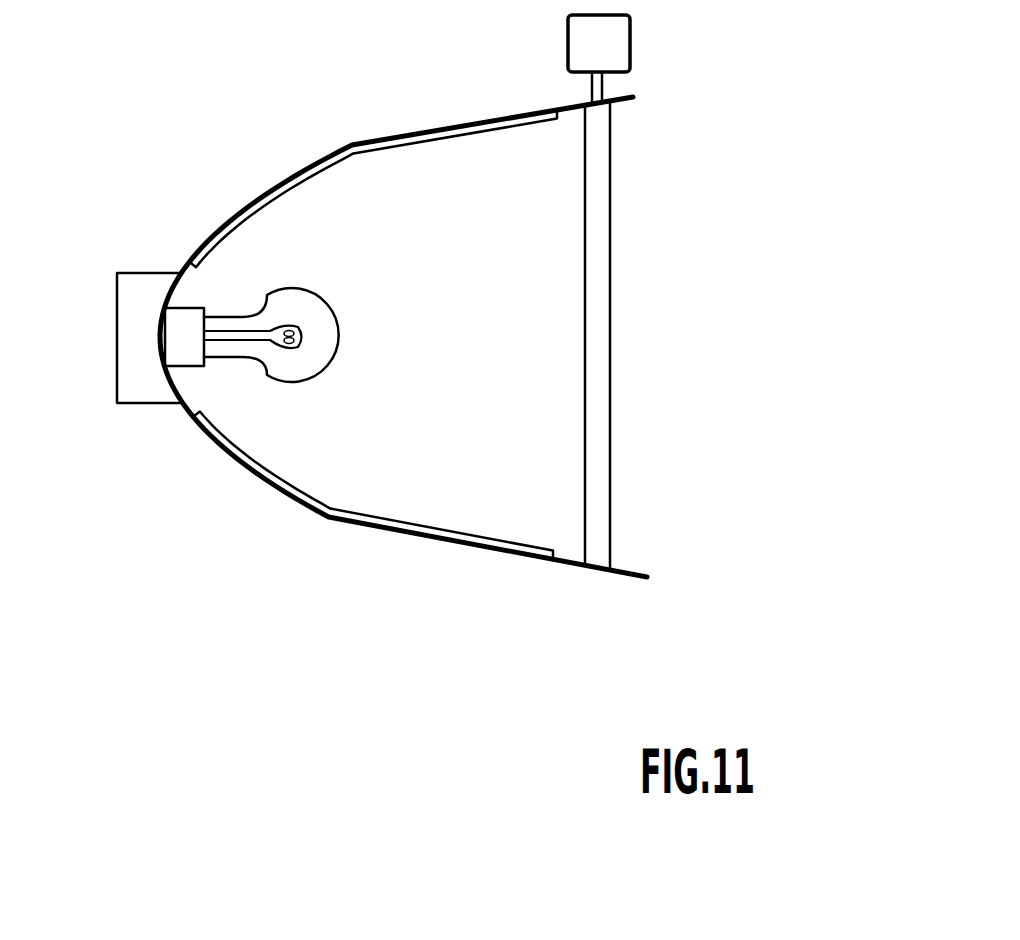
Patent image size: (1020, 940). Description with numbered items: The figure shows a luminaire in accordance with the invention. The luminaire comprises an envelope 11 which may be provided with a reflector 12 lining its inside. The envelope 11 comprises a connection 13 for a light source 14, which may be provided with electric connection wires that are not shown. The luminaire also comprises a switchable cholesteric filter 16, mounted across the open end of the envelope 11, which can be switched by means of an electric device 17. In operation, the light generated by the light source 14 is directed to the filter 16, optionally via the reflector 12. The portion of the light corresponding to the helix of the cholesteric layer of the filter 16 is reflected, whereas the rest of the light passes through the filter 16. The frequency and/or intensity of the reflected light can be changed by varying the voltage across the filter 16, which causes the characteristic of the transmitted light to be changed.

The envelope 11 is at (573, 568).
The reflector 12 is at (338, 520).
The connection 13 is at (188, 328).
The light source 14 is at (272, 288).
The switchable cholesteric filter 16 is at (597, 215).
The electric device 17 is at (618, 42).